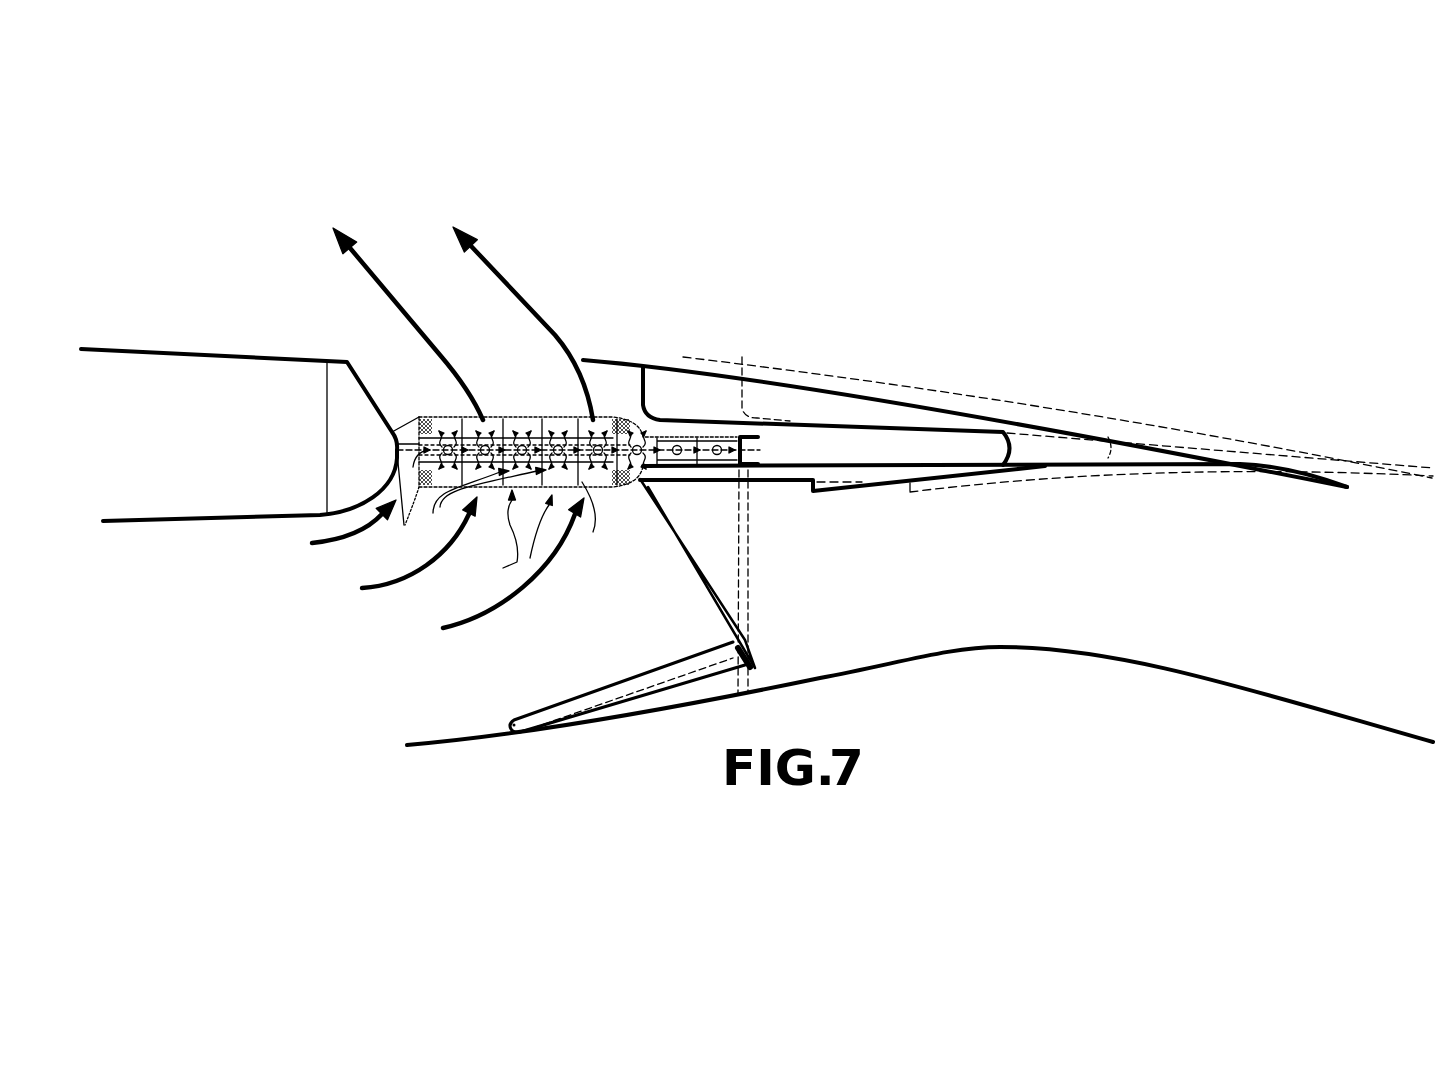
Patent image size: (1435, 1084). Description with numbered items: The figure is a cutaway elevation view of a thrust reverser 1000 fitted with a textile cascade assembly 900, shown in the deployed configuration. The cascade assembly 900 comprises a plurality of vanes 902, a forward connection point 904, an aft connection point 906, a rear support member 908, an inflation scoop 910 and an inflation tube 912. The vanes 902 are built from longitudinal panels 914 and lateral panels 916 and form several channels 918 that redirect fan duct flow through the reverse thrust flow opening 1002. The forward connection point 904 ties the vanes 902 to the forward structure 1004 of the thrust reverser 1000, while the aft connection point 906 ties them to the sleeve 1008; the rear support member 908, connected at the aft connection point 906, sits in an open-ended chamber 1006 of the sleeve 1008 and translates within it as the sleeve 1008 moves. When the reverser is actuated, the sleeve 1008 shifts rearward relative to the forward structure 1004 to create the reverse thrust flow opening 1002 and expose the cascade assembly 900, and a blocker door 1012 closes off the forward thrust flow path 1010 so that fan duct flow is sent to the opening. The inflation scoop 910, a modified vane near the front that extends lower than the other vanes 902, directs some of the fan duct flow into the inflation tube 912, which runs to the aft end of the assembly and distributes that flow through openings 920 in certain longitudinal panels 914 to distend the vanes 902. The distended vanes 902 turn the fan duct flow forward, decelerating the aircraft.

The cascade assembly 900 is at (564, 332).
The plurality of vanes 902 is at (507, 536).
The forward connection point 904 is at (398, 418).
The aft connection point 906 is at (726, 414).
The rear support member 908 is at (770, 448).
The inflation scoop 910 is at (397, 542).
The inflation tube 912 is at (633, 482).
The longitudinal panels 914 is at (547, 422).
The lateral panels 916 is at (506, 417).
The channels 918 is at (479, 505).
The openings 920 is at (605, 521).
The thrust reverser 1000 is at (886, 323).
The reverse thrust flow opening 1002 is at (409, 606).
The forward structure 1004 is at (244, 350).
The open-ended chamber 1006 is at (939, 430).
The sleeve 1008 is at (1050, 425).
The forward thrust flow path 1010 is at (1046, 604).
The blocker door 1012 is at (727, 607).